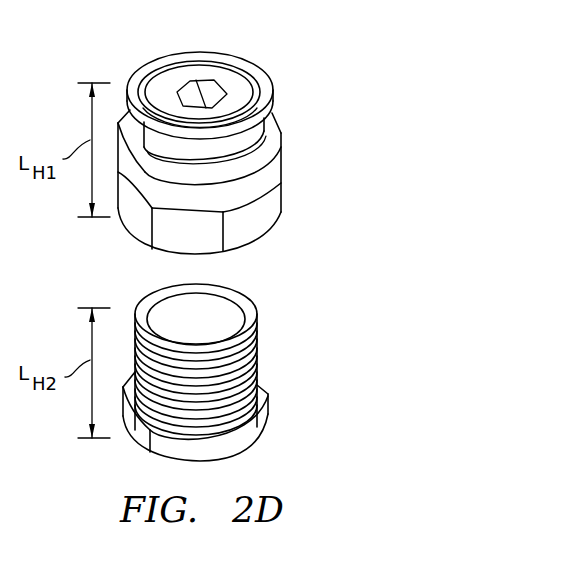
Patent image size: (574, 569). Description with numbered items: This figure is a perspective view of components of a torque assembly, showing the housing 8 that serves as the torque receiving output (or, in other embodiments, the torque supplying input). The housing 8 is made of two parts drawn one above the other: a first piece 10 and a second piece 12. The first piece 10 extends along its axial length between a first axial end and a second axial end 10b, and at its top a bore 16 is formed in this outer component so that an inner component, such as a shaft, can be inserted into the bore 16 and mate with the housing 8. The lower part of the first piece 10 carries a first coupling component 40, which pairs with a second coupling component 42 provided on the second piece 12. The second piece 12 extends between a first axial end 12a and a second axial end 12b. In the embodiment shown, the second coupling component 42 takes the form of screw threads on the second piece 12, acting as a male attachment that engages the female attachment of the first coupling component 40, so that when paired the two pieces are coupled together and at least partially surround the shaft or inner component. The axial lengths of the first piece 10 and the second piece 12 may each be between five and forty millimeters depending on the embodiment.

The housing 8 is at (343, 106).
The first piece 10 is at (240, 61).
The second axial end 10b is at (263, 74).
The bore 16 is at (195, 79).
The first coupling component 40 is at (137, 238).
The second piece 12 is at (268, 410).
The first axial end 12a is at (257, 309).
The second coupling component 42 is at (256, 357).
The second axial end 12b is at (258, 440).